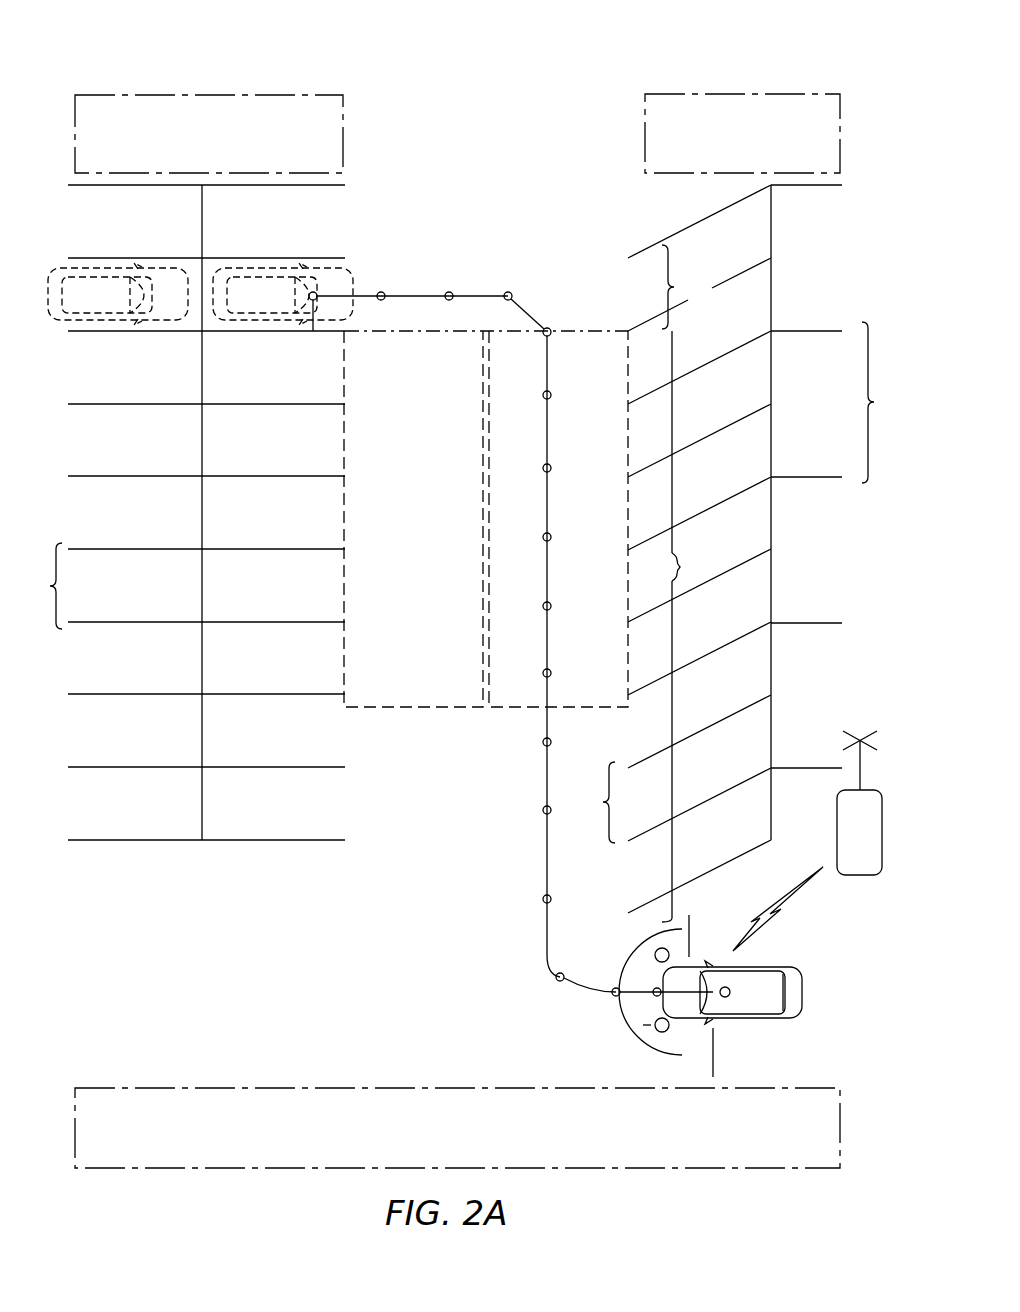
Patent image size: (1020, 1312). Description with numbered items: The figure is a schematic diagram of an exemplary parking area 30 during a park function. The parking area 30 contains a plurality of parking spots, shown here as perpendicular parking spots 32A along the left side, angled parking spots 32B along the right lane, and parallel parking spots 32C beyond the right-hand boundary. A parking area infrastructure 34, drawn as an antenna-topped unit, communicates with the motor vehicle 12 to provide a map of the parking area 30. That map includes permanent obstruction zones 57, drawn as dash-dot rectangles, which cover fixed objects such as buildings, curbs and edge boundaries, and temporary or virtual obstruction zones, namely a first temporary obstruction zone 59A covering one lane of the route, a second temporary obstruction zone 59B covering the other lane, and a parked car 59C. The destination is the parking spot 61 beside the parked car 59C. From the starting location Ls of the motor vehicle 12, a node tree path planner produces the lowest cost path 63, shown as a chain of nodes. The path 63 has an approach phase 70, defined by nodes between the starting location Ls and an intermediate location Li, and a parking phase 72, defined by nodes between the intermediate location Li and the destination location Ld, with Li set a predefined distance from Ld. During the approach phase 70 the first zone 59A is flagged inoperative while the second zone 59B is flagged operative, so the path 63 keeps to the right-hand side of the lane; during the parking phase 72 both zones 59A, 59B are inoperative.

The parking area 30 is at (714, 56).
The permanent obstruction zones 57 is at (287, 94).
The destination parking spot 61 is at (297, 268).
The first temporary obstruction zone 59A is at (600, 331).
The second temporary obstruction zone 59B is at (344, 428).
The parked car 59C is at (120, 322).
The parking phase 72 is at (683, 287).
The approach phase 70 is at (683, 626).
The perpendicular parking spots 32A is at (41, 586).
The angled parking spots 32B is at (591, 802).
The parallel parking spots 32C is at (891, 402).
The lowest cost path 63 is at (547, 580).
The parking area infrastructure 34 is at (866, 875).
The motor vehicle 12 is at (770, 1003).
The intermediate location Li is at (548, 326).
The destination location Ld is at (313, 331).
The starting location Ls is at (727, 997).